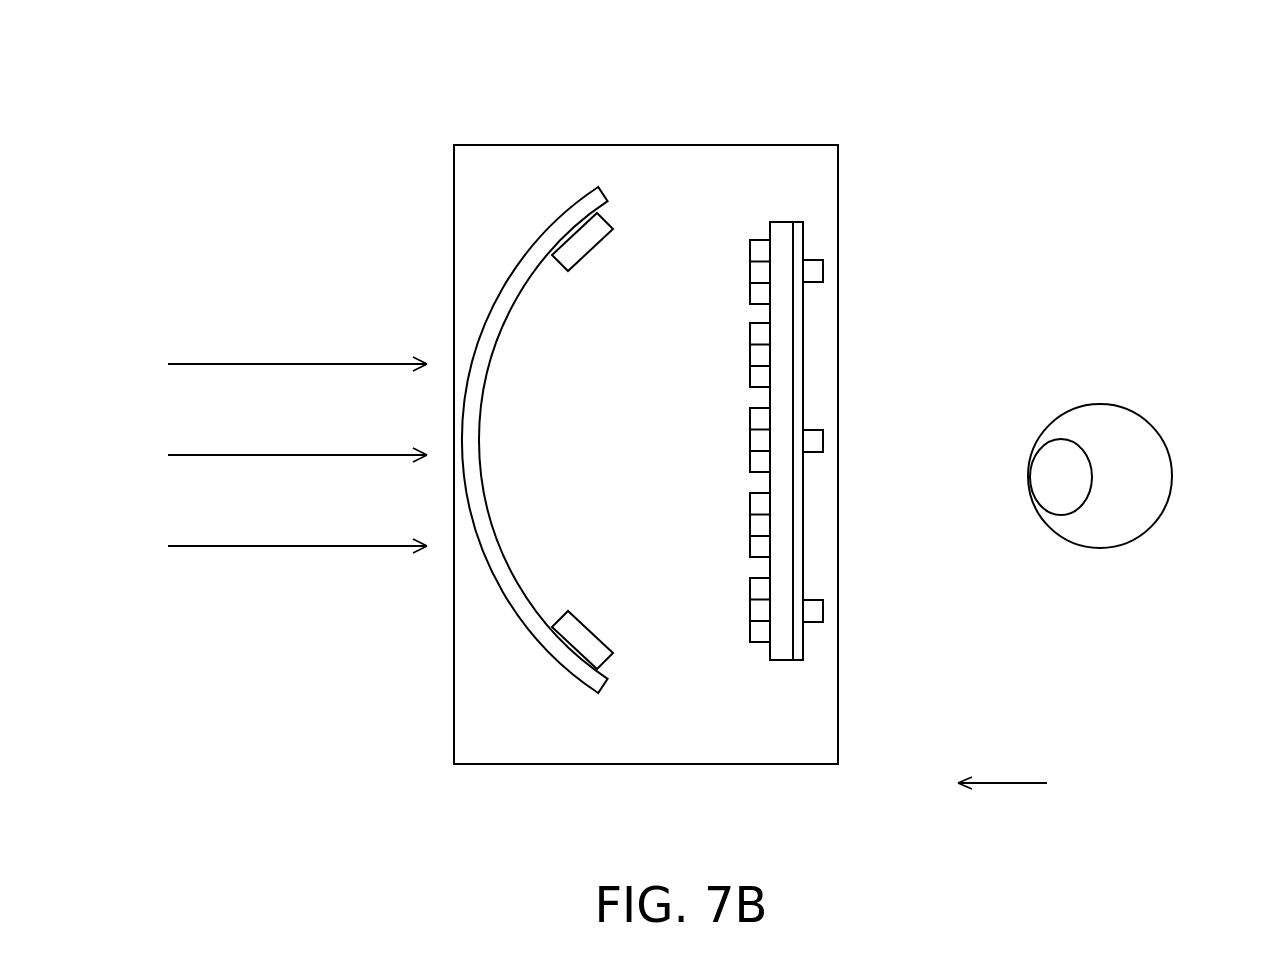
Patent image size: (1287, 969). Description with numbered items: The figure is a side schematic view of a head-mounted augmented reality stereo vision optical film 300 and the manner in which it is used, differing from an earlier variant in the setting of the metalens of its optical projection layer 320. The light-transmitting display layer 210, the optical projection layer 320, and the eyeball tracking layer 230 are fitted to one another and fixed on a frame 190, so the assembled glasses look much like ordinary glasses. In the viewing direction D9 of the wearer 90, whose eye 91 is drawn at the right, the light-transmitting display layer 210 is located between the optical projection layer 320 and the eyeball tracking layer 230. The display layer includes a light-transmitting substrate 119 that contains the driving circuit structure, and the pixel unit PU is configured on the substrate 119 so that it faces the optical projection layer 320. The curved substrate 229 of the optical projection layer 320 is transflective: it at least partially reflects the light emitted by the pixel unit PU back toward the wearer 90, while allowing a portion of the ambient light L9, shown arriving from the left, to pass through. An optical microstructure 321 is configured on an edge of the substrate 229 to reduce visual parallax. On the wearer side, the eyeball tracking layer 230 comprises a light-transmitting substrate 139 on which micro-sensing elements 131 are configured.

The head-mounted augmented reality stereo vision optical film 300 is at (905, 120).
The frame 190 is at (508, 145).
The optical projection layer 320 is at (675, 67).
The substrate 229 is at (604, 194).
The optical microstructure 321 is at (603, 222).
The light-transmitting display layer 210 is at (813, 67).
The pixel unit PU is at (762, 243).
The substrate 119 is at (782, 232).
The eyeball tracking layer 230 is at (886, 839).
The substrate 139 is at (798, 658).
The micro-sensing element 131 is at (812, 612).
The ambient light L9 is at (288, 547).
The viewing direction D9 is at (1010, 785).
The wearer 90 is at (1148, 447).
The pupil 91 is at (1147, 420).